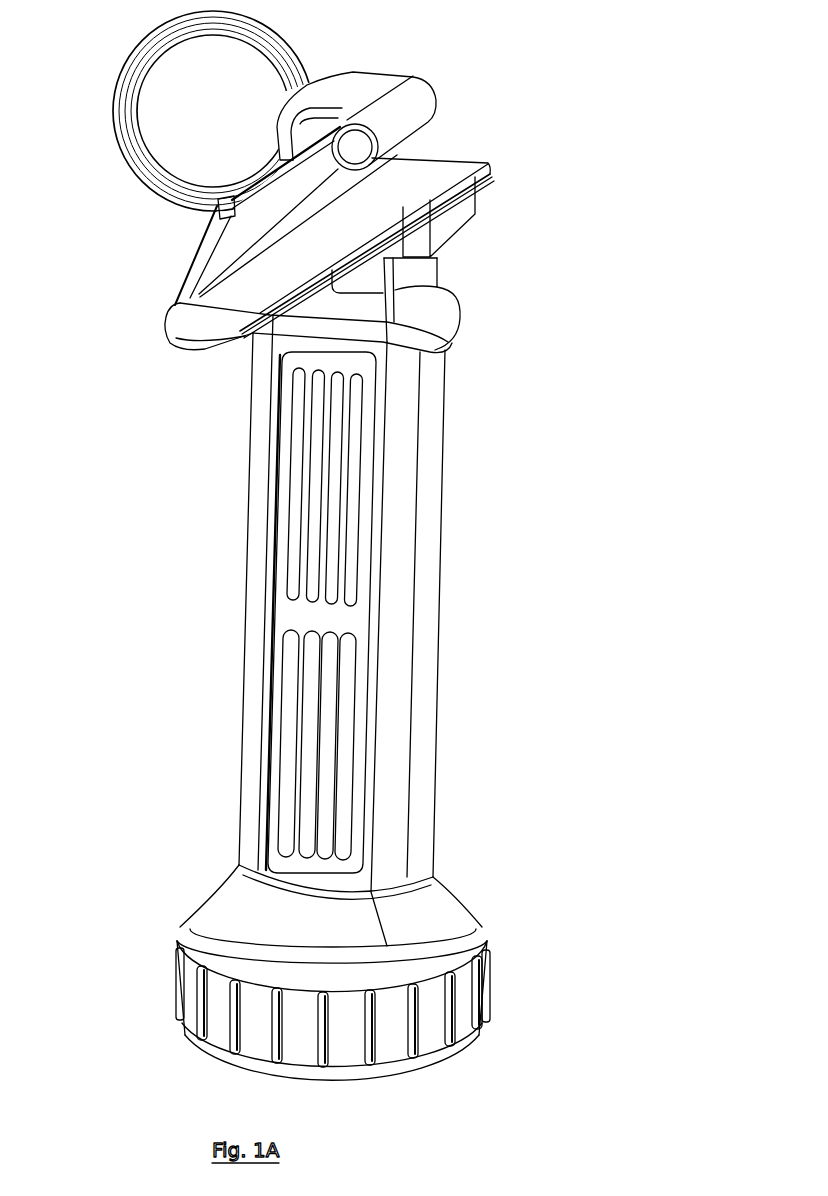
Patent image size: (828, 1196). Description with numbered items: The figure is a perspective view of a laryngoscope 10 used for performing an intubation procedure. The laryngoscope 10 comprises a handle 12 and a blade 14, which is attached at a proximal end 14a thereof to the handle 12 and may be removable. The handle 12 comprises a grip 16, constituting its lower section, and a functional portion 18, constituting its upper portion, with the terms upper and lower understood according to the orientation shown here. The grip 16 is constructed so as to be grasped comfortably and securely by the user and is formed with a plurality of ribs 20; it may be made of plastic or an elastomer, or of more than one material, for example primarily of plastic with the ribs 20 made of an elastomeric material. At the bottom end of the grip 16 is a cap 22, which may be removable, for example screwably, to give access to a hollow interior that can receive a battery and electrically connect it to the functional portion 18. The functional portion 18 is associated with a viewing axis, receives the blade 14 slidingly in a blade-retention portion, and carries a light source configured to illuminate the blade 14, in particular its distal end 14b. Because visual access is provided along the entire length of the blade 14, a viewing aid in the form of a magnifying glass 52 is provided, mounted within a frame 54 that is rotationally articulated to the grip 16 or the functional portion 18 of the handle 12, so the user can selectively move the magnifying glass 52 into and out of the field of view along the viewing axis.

The laryngoscope 10 is at (633, 276).
The handle 12 is at (440, 335).
The blade 14 is at (421, 184).
The proximal end 14a is at (490, 168).
The distal end 14b is at (183, 347).
The grip 16 is at (297, 614).
The functional portion 18 is at (417, 278).
The ribs 20 is at (350, 812).
The cap 22 is at (463, 1012).
The magnifying glass 52 is at (170, 135).
The frame 54 is at (114, 118).